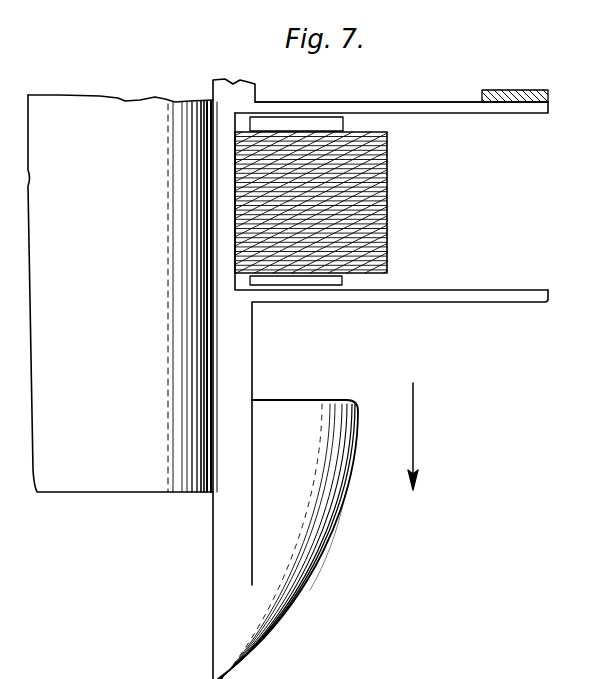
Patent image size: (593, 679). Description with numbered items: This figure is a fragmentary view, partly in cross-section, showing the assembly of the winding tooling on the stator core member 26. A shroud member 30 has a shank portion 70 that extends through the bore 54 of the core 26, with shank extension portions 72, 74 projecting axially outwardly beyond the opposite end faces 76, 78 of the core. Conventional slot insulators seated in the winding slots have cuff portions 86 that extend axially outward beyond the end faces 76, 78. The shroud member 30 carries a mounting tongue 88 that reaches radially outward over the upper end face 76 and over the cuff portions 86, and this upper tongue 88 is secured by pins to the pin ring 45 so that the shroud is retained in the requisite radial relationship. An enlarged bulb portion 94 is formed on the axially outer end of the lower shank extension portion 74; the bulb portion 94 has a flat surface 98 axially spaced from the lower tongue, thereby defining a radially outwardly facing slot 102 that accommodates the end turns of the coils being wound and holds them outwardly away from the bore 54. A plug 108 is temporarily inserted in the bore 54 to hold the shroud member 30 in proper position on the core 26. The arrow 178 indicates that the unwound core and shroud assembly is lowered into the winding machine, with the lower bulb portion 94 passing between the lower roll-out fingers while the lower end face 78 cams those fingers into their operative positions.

The plug 108 is at (131, 110).
The shank extension portion 72 is at (258, 92).
The mounting tongue 88 is at (408, 101).
The pin ring 45 is at (509, 89).
The end face 76 is at (373, 128).
The cuff portion 86 is at (314, 121).
The stator core member 26 is at (388, 200).
The end face 78 is at (380, 281).
The bore 54 is at (235, 165).
The shank portion 70 is at (222, 213).
The shank extension portion 74 is at (243, 345).
The shroud member 30 is at (363, 515).
The slot 102 is at (288, 364).
The flat surface 98 is at (325, 398).
The bulb portion 94 is at (318, 562).
The arrow 178 is at (413, 435).